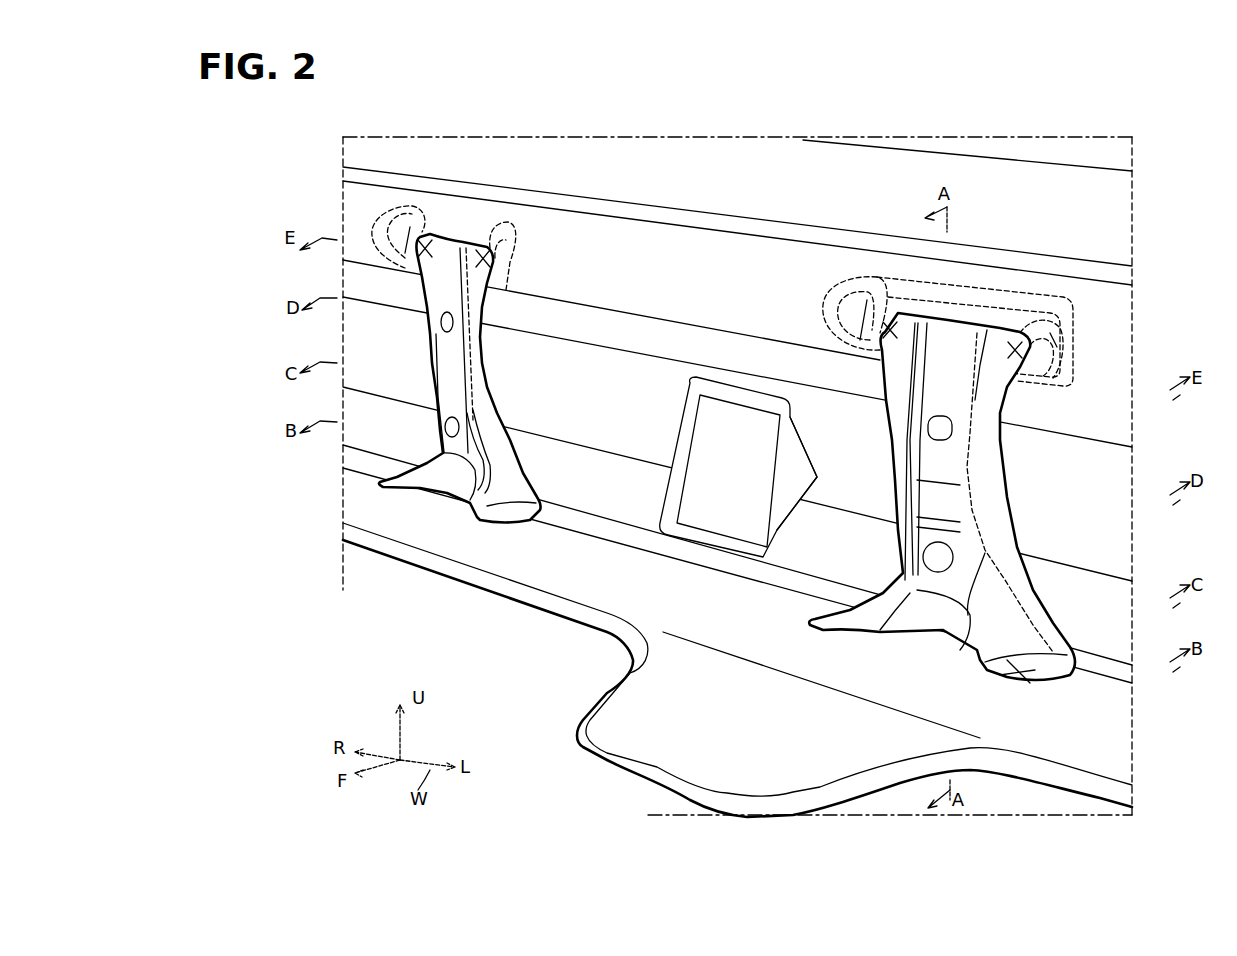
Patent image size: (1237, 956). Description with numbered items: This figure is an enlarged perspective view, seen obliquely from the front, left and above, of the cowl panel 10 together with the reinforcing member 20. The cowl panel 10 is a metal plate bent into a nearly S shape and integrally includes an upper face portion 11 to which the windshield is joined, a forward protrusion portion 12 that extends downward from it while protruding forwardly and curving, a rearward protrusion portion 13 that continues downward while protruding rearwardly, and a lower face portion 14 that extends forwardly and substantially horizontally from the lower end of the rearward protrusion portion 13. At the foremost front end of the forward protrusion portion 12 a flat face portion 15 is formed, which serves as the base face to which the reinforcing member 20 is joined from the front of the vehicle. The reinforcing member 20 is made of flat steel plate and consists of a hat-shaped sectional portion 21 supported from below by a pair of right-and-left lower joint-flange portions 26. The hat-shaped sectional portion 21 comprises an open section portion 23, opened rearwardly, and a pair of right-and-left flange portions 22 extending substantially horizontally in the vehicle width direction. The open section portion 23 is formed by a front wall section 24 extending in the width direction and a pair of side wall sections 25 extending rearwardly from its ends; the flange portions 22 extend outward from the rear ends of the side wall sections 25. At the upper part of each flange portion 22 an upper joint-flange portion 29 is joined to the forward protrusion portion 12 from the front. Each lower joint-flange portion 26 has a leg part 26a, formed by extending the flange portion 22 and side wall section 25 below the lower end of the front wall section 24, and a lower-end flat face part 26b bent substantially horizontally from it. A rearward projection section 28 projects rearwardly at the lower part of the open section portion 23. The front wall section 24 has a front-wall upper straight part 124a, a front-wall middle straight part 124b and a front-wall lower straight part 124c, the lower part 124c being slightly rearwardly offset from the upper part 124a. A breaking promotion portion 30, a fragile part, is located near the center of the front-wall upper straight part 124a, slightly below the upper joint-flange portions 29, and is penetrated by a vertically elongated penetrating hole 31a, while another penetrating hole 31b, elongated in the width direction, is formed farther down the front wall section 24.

The cowl panel 10 is at (484, 602).
The upper face portion 11 is at (830, 163).
The forward protrusion portion 12 is at (1117, 330).
The rearward protrusion portion 13 is at (1113, 498).
The lower face portion 14 is at (567, 580).
The flat face portion 15 is at (507, 253).
The reinforcing member 20 is at (415, 353).
The hat-shaped sectional portion 21 is at (494, 361).
The flange portions 22 is at (423, 287).
The open section portion 23 is at (478, 383).
The front wall section 24 is at (447, 250).
The side wall sections 25 is at (478, 427).
The lower joint-flange portions 26 is at (390, 495).
The leg part 26a is at (424, 490).
The lower-end flat face part 26b is at (377, 485).
The rearward projection section 28 is at (448, 453).
The upper joint-flange portion 29 is at (430, 220).
The breaking promotion portion 30 is at (417, 324).
The penetrating hole 31a is at (452, 322).
The penetrating hole 31b is at (446, 427).
The front-wall upper straight part 124a is at (458, 297).
The front-wall middle straight part 124b is at (447, 390).
The front-wall lower straight part 124c is at (493, 478).